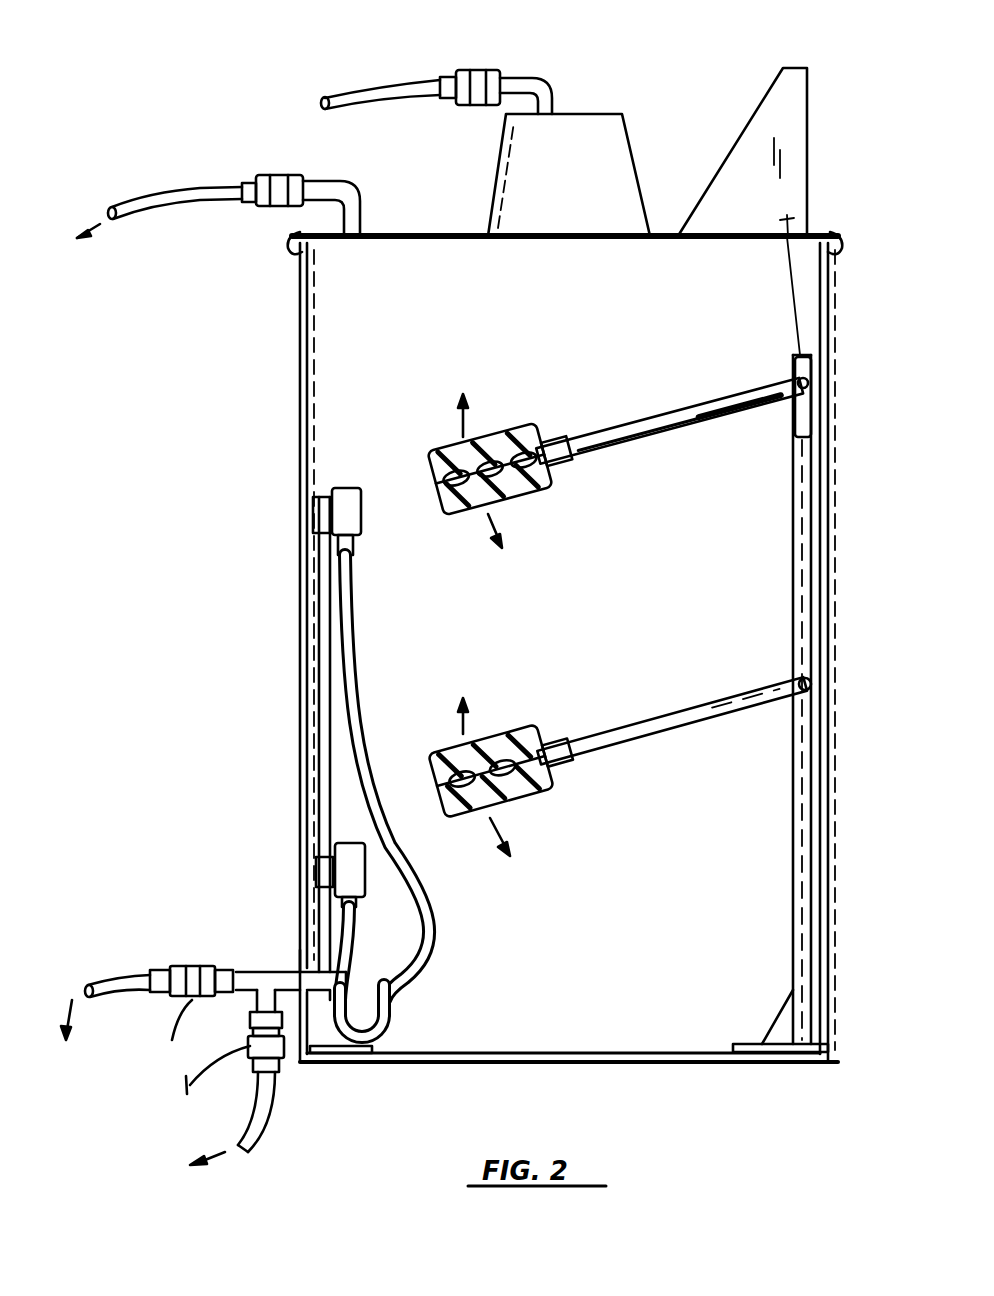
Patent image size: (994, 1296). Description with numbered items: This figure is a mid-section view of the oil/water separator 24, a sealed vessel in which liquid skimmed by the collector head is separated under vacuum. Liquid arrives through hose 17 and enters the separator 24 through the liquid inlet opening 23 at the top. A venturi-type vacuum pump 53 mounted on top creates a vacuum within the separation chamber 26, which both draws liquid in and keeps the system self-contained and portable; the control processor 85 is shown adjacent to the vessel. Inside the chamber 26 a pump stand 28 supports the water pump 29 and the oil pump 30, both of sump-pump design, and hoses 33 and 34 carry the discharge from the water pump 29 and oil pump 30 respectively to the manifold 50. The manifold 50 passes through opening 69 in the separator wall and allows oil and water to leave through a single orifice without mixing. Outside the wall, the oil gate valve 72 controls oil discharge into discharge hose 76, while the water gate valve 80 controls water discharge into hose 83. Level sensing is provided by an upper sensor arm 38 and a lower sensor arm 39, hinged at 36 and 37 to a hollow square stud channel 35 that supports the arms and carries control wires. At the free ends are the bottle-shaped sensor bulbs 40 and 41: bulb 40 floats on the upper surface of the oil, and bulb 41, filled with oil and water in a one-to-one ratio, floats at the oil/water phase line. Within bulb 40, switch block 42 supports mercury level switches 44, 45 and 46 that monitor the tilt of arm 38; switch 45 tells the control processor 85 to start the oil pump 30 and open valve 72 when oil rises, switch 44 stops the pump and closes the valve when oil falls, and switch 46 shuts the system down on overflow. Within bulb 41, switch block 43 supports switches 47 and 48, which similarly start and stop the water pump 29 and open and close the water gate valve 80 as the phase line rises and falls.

The hose 17 is at (213, 158).
The liquid inlet opening 23 is at (352, 250).
The oil/water separator 24 is at (272, 448).
The separation chamber 26 is at (640, 606).
The pump stand 28 is at (337, 823).
The water pump 29 is at (365, 870).
The oil pump 30 is at (361, 540).
The hose 33 is at (392, 1008).
The hose 34 is at (368, 682).
The stud channel 35 is at (790, 496).
The hinge 36 is at (812, 383).
The hinge 37 is at (798, 680).
The upper sensor arm 38 is at (684, 398).
The lower sensor arm 39 is at (640, 718).
The sensor bulb 40 is at (501, 467).
The sensor bulb 41 is at (483, 770).
The switch block 42 is at (405, 473).
The switch block 43 is at (411, 757).
The mercury level switch 44 is at (439, 534).
The mercury level switch 45 is at (473, 473).
The mercury level switch 46 is at (520, 440).
The mercury level switch 47 is at (462, 779).
The mercury level switch 48 is at (502, 768).
The manifold 50 is at (268, 968).
The vacuum pump 53 is at (612, 112).
The opening 69 is at (298, 945).
The oil gate valve 72 is at (182, 968).
The discharge hose 76 is at (108, 972).
The water gate valve 80 is at (250, 1048).
The hose 83 is at (272, 1134).
The control processor 85 is at (778, 80).